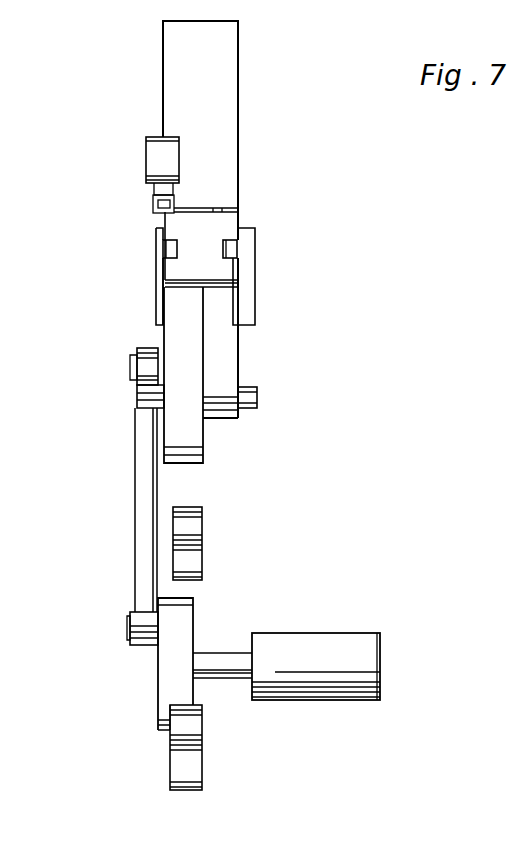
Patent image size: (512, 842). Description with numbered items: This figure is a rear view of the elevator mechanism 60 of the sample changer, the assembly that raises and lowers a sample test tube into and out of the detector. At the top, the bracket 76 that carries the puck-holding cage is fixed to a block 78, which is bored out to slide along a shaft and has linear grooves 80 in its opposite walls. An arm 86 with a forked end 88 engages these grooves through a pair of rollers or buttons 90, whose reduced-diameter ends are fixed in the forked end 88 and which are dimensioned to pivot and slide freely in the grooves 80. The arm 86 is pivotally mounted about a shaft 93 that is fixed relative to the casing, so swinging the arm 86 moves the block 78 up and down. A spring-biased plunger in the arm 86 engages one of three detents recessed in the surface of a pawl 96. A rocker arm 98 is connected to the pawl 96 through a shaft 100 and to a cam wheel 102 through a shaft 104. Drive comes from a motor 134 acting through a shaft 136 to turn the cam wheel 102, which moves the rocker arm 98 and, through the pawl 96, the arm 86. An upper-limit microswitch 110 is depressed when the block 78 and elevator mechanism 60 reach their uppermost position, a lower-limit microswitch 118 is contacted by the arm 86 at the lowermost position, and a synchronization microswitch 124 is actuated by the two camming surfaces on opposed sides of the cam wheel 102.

The elevator mechanism 60 is at (240, 127).
The bracket 76 is at (224, 55).
The block 78 is at (148, 284).
The linear grooves 80 is at (163, 252).
The arm 86 is at (241, 373).
The forked end 88 is at (246, 270).
The buttons 90 is at (165, 244).
The shaft 93 is at (247, 398).
The pawl 96 is at (178, 333).
The rocker arm 98 is at (146, 422).
The shaft 100 is at (133, 368).
The cam wheel 102 is at (185, 630).
The shaft 104 is at (130, 622).
The upper-limit microswitch 110 is at (160, 152).
The lower-limit microswitch 118 is at (190, 527).
The synchronization microswitch 124 is at (193, 760).
The motor 134 is at (312, 681).
The shaft 136 is at (228, 665).